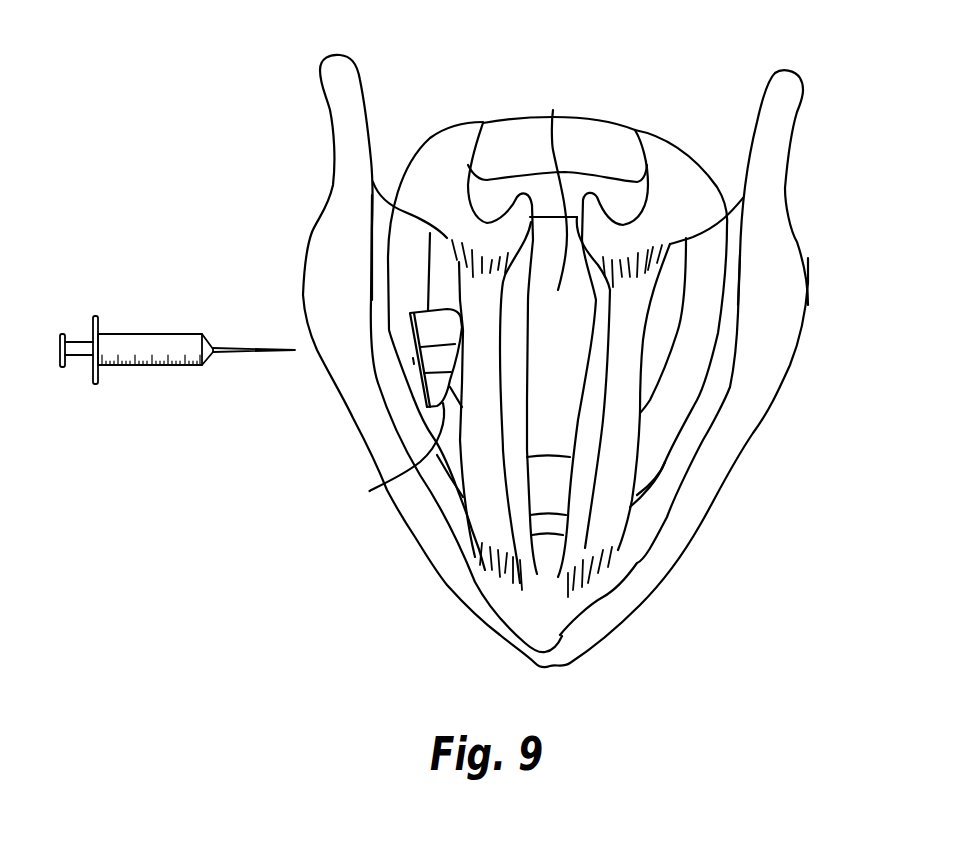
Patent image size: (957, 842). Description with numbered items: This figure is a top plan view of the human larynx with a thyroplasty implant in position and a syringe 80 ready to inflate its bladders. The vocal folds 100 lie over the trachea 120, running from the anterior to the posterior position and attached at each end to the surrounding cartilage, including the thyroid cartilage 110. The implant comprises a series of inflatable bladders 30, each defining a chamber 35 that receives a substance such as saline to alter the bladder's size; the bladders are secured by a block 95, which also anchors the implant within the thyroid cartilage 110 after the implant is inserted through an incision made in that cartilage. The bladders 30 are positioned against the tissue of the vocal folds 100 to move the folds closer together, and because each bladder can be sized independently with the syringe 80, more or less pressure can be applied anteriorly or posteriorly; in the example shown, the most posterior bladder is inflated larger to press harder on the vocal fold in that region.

The inflatable bladders 30 is at (372, 491).
The chamber 35 is at (433, 388).
The syringe 80 is at (155, 365).
The block 95 is at (415, 360).
The vocal folds 100 is at (480, 284).
The thyroid cartilage 110 is at (700, 408).
The trachea 120 is at (553, 110).